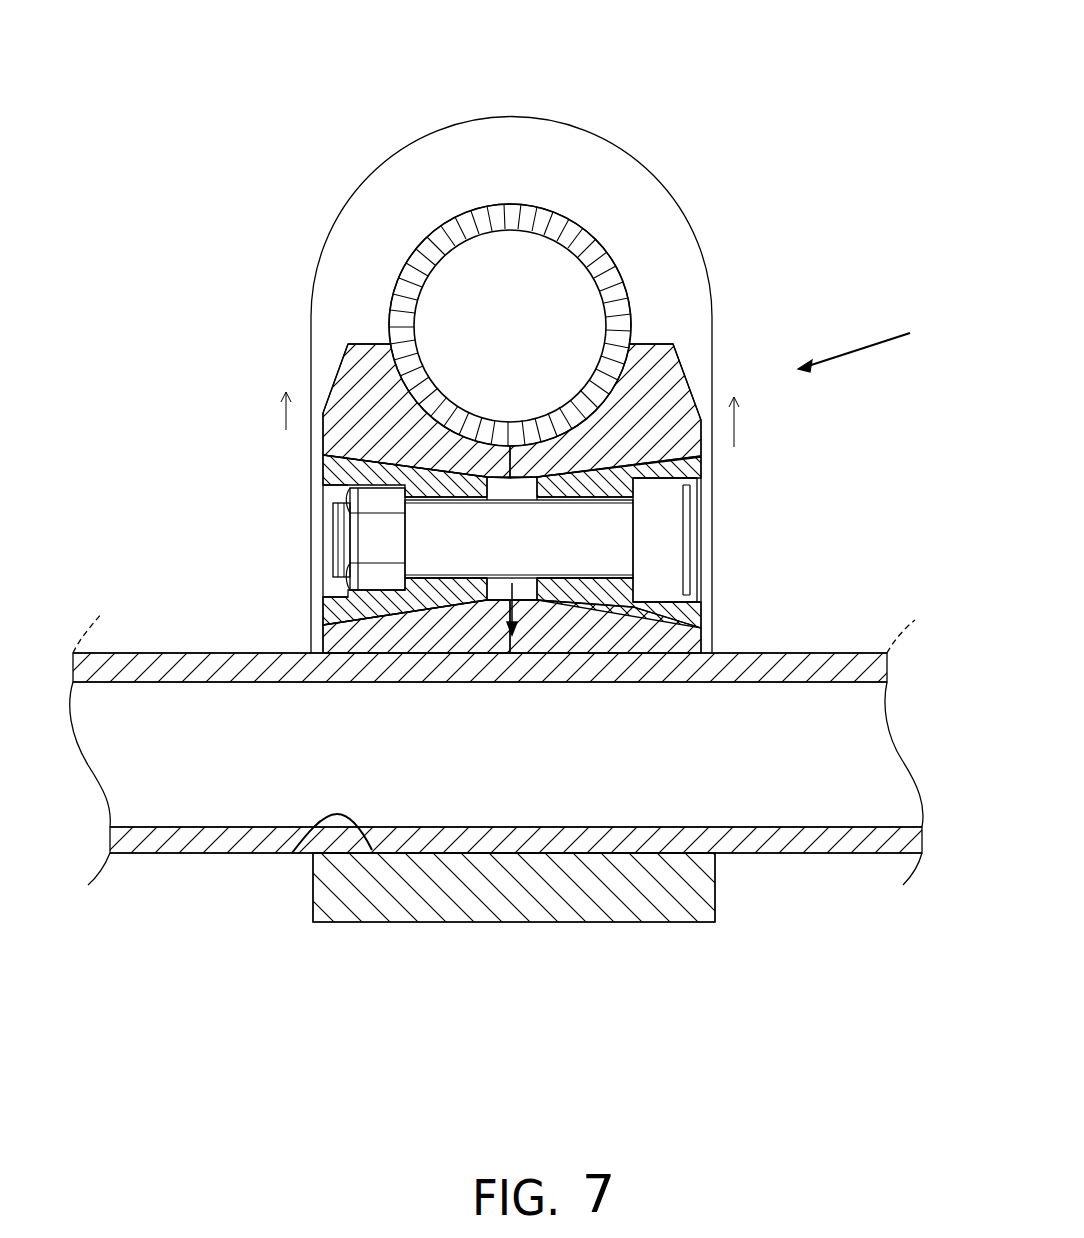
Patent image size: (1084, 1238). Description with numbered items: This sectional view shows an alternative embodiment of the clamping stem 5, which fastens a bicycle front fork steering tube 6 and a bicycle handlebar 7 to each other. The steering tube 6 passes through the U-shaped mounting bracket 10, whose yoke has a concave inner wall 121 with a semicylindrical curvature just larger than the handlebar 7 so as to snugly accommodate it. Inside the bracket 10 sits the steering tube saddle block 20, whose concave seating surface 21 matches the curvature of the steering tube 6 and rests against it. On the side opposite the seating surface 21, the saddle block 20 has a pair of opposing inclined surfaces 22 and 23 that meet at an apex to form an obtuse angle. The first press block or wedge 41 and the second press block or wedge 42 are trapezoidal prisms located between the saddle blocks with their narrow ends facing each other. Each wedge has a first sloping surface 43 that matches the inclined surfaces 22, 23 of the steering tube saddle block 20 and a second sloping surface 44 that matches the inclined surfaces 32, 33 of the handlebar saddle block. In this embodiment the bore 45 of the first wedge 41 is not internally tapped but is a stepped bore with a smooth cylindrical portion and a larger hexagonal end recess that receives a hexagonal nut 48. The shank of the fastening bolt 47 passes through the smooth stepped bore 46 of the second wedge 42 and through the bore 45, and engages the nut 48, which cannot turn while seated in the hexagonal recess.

The clamping stem 5 is at (871, 342).
The bicycle front fork steering tube 6 is at (510, 224).
The bicycle handlebar 7 is at (200, 853).
The U-shaped mounting bracket 10 is at (310, 362).
The steering tube saddle block 20 is at (683, 382).
The concave seating surface 21 is at (530, 400).
The first inclined surface 22 is at (392, 457).
The second inclined surface 23 is at (633, 457).
The first sloping surface of the wedge 43 is at (537, 330).
The first inclined surface of the handlebar saddle block 32 is at (330, 600).
The second inclined surface of the handlebar saddle block 33 is at (636, 603).
The second sloping surface of the wedge 44 is at (448, 674).
The first press block or wedge 41 is at (310, 476).
The second press block or wedge 42 is at (714, 610).
The through hole bore of the first wedge 45 is at (310, 519).
The stepped through hole bore of the second wedge 46 is at (633, 500).
The fastening bolt 47 is at (702, 548).
The nut 48 is at (372, 536).
The concave inner wall of the yoke 121 is at (300, 845).